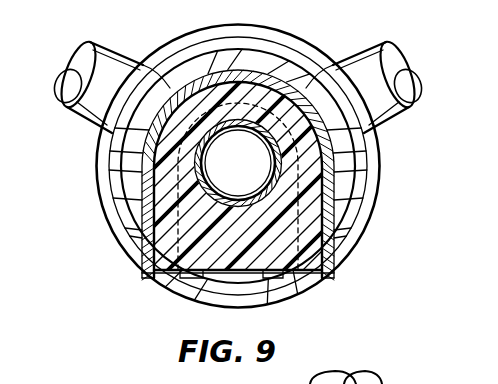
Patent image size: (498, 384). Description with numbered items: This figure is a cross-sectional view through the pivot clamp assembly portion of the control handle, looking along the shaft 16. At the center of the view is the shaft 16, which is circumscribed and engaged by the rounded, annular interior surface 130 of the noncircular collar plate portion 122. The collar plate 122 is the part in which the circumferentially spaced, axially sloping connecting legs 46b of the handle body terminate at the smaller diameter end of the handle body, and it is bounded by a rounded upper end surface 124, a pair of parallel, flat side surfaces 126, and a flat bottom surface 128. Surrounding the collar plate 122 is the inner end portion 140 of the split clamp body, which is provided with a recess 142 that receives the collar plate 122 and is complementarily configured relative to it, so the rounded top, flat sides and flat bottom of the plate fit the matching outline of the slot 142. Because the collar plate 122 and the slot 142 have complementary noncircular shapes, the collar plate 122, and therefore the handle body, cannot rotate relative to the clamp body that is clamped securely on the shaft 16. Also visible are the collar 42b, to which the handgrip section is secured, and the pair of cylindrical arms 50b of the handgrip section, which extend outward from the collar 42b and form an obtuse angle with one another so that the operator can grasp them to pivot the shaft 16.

The shaft 16 is at (248, 146).
The collar 42b is at (380, 187).
The connecting legs 46b is at (183, 50).
The cylindrical arms 50b is at (117, 43).
The collar plate portion 122 is at (313, 205).
The rounded upper end surface 124 is at (251, 80).
The flat side surfaces 126 is at (150, 203).
The flat bottom surface 128 is at (192, 281).
The annular interior surface 130 is at (263, 138).
The inner end portion 140 is at (99, 167).
The recess 142 is at (160, 239).